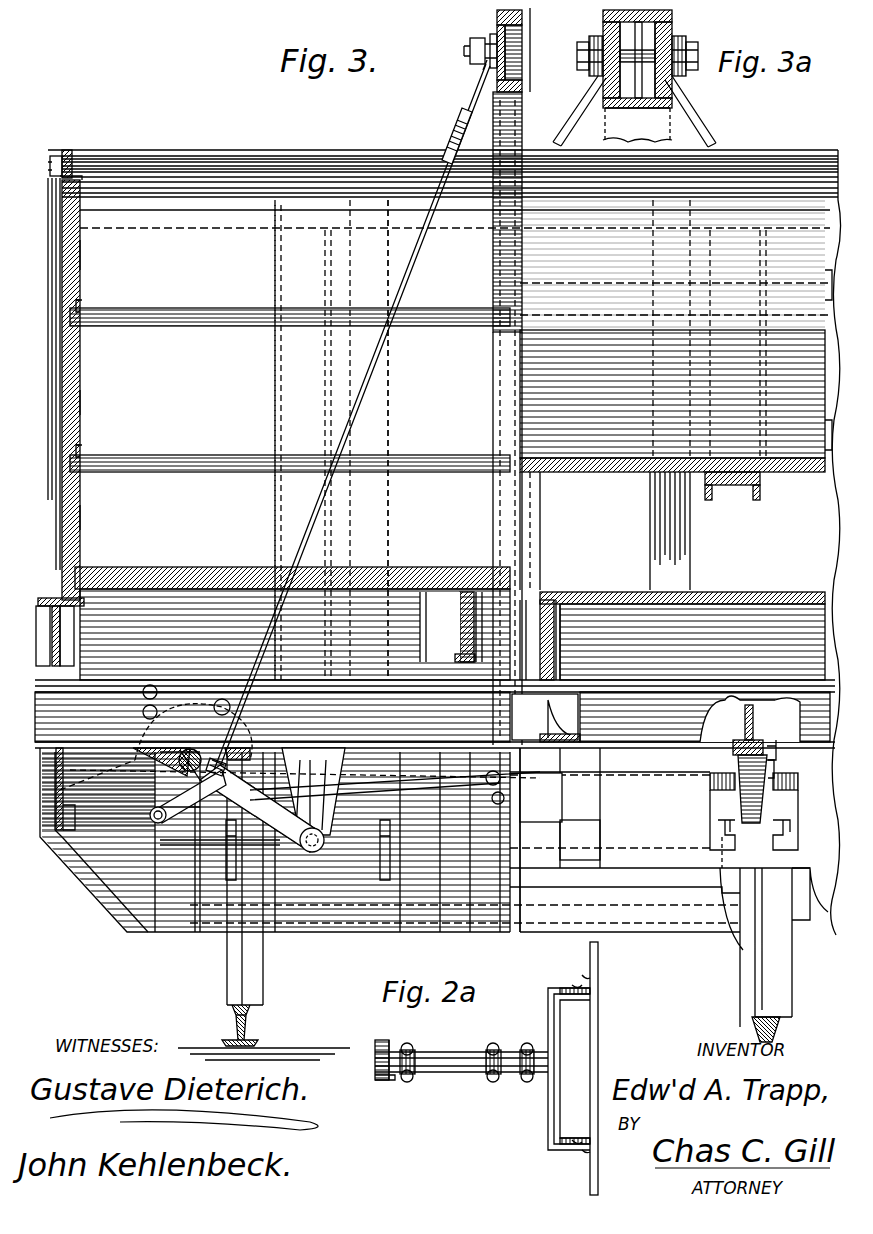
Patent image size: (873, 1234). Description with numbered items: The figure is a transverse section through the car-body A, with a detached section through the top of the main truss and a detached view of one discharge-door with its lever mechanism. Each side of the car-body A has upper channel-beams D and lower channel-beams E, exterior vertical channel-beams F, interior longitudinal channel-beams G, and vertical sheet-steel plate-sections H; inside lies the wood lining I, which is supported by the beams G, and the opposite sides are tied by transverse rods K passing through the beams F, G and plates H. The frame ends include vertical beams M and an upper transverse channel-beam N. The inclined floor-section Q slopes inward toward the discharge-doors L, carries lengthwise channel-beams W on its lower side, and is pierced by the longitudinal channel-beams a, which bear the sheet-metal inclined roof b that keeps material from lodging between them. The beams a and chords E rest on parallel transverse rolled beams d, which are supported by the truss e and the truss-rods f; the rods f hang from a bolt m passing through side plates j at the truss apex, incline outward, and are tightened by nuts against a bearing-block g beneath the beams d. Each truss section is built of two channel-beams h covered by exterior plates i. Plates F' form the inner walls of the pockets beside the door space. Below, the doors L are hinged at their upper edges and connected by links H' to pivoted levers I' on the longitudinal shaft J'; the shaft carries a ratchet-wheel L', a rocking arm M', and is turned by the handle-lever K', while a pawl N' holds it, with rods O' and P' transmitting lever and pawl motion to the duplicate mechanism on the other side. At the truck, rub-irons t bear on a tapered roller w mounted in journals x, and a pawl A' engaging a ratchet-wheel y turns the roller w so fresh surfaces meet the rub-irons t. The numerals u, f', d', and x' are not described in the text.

In FIG. 3, the car-body A is at (443, 161).
In FIG. 3, the transverse channel-beam N is at (450, 141).
In FIG. 3, the upper channel-beams D is at (55, 155).
In FIG. 3, the vertical metal plate-sections H is at (54, 388).
In FIG. 3, the exterior vertical channel-beams F is at (43, 374).
In FIG. 3, the wood lining I is at (92, 385).
In FIG. 3, the interior longitudinal channel-beams G is at (82, 302).
In FIG. 3, the transverse rods K is at (290, 381).
In FIG. 3, the channel-beams W is at (277, 385).
In FIG. 3, the vertical beams M is at (538, 440).
In FIG. 3, the floor-section Q is at (672, 348).
In FIG. 3, the lower channel-beams E is at (86, 612).
In FIG. 3, the inclined roof b is at (490, 568).
In FIG. 3, the channel-beams a is at (466, 644).
In FIG. 3, the post u is at (543, 640).
In FIG. 3, the truss e is at (524, 122).
In FIG. 3A, the truss e is at (645, 123).
In FIG. 3, the exterior plates i is at (524, 14).
In FIG. 3A, the exterior plates i is at (686, 15).
In FIG. 3, the channel-beams h is at (496, 16).
In FIG. 3A, the channel-beams h is at (602, 16).
In FIG. 3, the side plates j is at (490, 40).
In FIG. 3A, the side plates j is at (602, 38).
In FIG. 3, the bolt m is at (464, 55).
In FIG. 3A, the bolt m is at (698, 70).
In FIG. 3, the truss-rods f is at (469, 81).
In FIG. 3A, the truss-rods f is at (639, 111).
In FIG. 3, the connecting rod f' is at (352, 418).
In FIG. 3, the rolled beams d is at (435, 714).
In FIG. 3, the lower sill d' is at (262, 833).
In FIG. 3, the handle-lever K' is at (175, 765).
In FIG. 3, the rocking arm M' is at (101, 783).
In FIG. 3, the pivoted levers I' is at (249, 800).
In FIG. 2A, the pivoted levers I' is at (378, 1054).
In FIG. 3, the ratchet-wheel L' is at (251, 839).
In FIG. 3, the longitudinal shaft J' is at (170, 796).
In FIG. 3, the bearing-block g is at (237, 746).
In FIG. 3, the pawl N' is at (148, 686).
In FIG. 3, the rod P' is at (193, 705).
In FIG. 3, the rod O' is at (305, 791).
In FIG. 3, the discharge-doors L is at (182, 846).
In FIG. 2A, the discharge-doors L is at (592, 1068).
In FIG. 3, the plates F' is at (514, 840).
In FIG. 3, the rub-irons t is at (732, 747).
In FIG. 3, the tapered roller w is at (752, 789).
In FIG. 3, the pawl A' is at (786, 748).
In FIG. 3, the ratchet-wheel y is at (776, 766).
In FIG. 3, the journals x is at (715, 811).
In FIG. 3, the bearing block x' is at (797, 811).
In FIG. 2A, the links H' is at (482, 1069).